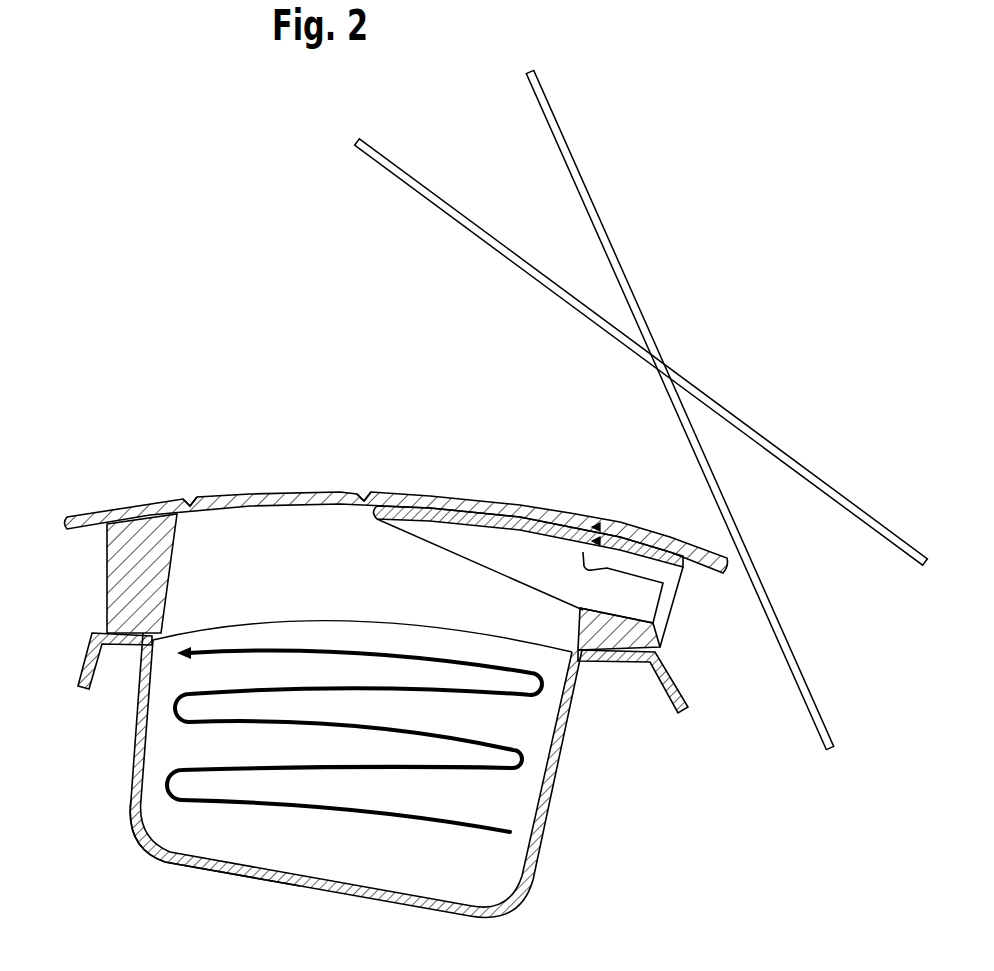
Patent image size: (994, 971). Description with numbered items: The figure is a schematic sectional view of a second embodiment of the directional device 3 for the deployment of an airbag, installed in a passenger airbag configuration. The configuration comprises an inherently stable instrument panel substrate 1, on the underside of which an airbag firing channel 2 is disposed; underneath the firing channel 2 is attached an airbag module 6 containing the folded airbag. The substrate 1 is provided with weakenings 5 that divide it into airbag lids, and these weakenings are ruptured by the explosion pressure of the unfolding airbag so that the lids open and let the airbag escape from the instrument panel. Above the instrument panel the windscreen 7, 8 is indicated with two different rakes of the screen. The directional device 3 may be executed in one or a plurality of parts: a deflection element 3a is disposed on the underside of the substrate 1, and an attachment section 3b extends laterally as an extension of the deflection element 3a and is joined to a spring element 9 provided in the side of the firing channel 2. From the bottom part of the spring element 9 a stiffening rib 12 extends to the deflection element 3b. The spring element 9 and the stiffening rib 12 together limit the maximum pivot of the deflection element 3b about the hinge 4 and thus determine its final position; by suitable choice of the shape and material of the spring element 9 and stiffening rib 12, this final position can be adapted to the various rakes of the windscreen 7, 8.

The instrument panel substrate 1 is at (87, 514).
The airbag firing channel 2 is at (107, 590).
The directional device 3 is at (545, 610).
The deflection element 3a is at (672, 541).
The attachment section 3b is at (396, 522).
The hinge 4 is at (598, 540).
The weakenings 5 is at (200, 494).
The airbag module 6 is at (137, 840).
The windscreen 7 is at (405, 176).
The windscreen 8 is at (574, 176).
The spring element 9 is at (678, 600).
The stiffening rib 12 is at (497, 557).